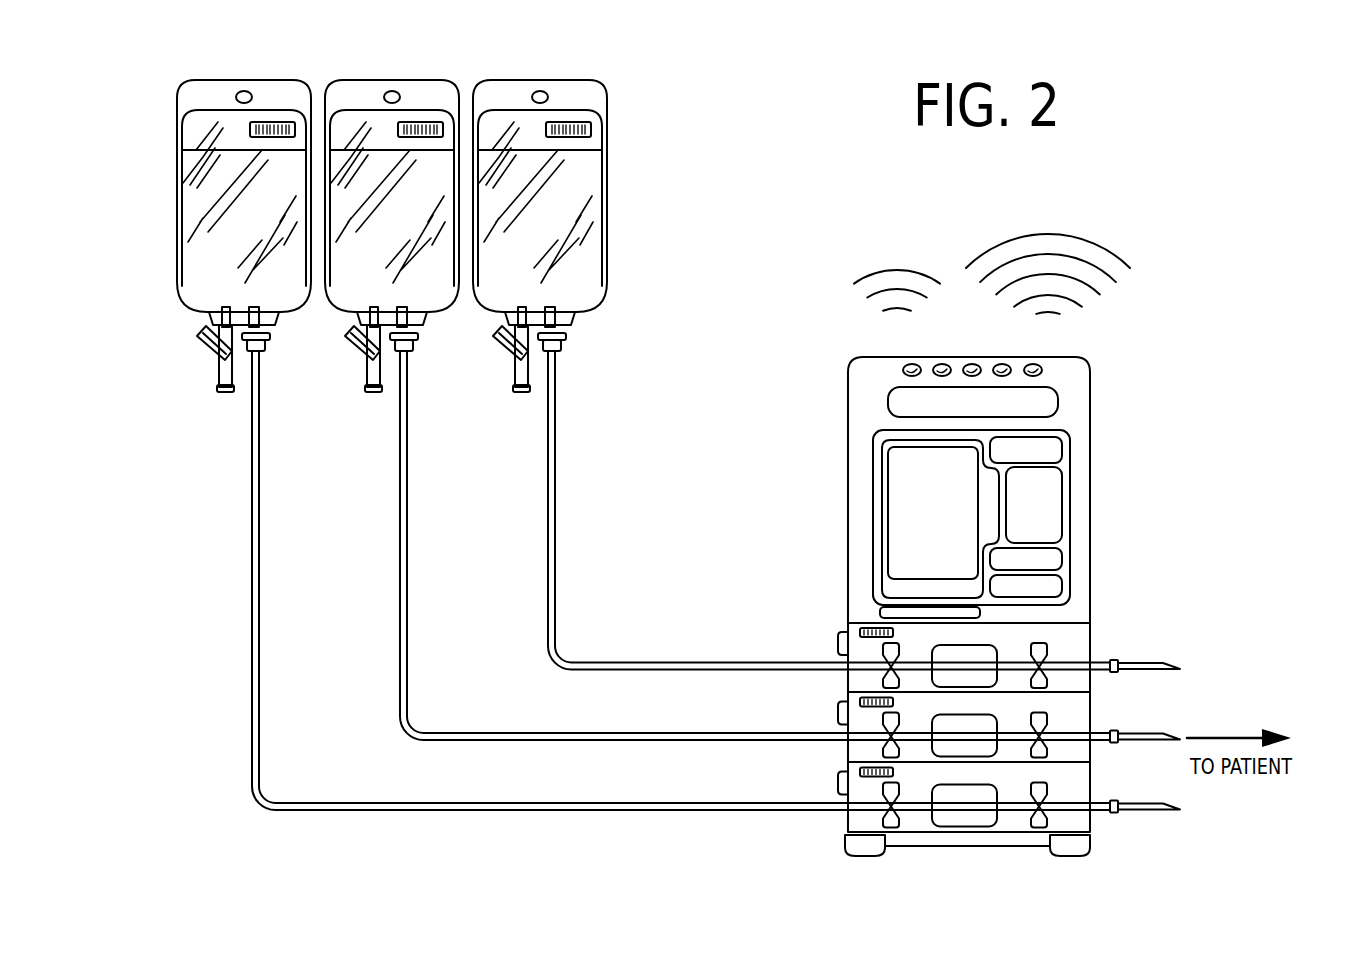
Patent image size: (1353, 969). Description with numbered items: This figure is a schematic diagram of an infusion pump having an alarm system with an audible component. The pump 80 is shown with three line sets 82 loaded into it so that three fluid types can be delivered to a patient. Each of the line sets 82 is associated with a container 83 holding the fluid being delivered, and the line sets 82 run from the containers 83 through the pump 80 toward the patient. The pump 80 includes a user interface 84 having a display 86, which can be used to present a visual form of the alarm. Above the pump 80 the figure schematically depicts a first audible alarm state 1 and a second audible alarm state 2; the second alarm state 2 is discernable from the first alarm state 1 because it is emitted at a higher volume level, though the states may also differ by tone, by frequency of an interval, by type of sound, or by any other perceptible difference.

The first audible alarm state 1 is at (897, 278).
The second audible alarm state 2 is at (1048, 262).
The pump 80 is at (820, 453).
The line sets 82 is at (623, 733).
The container 83 is at (293, 88).
The user interface 84 is at (1066, 495).
The display 86 is at (946, 519).